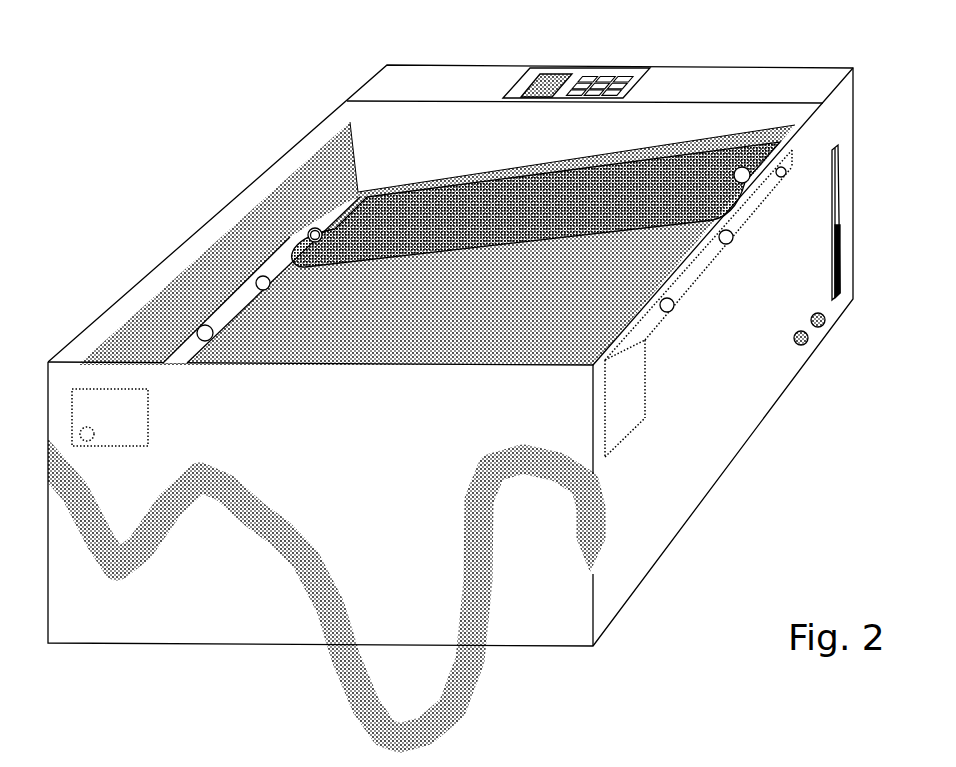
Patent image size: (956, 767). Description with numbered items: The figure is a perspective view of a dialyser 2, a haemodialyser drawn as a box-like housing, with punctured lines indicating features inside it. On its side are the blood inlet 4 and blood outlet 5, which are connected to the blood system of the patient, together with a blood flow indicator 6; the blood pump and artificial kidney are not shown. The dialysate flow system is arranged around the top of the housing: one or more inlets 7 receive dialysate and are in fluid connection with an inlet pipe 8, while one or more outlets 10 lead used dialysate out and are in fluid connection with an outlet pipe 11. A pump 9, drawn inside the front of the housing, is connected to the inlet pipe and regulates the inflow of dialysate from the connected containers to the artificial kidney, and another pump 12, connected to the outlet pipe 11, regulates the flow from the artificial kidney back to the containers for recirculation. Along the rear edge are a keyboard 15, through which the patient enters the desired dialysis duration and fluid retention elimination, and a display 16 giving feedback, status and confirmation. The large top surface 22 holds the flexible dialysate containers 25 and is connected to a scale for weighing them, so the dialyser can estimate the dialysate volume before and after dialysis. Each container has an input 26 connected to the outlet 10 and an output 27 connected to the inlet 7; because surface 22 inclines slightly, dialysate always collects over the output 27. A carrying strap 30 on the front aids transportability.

The dialyser 2 is at (235, 102).
The blood inlet 4 is at (808, 347).
The blood outlet 5 is at (826, 323).
The blood flow indicator 6 is at (845, 212).
The inlets 7 is at (255, 280).
The inlet pipe 8 is at (285, 265).
The pump 9 is at (110, 417).
The outlets 10 is at (727, 245).
The outlet pipe 11 is at (757, 208).
The pump 12 is at (625, 398).
The keyboard 15 is at (627, 67).
The display 16 is at (547, 80).
The surface 22 is at (437, 243).
The dialysate containers 25 is at (536, 204).
The input 26 is at (747, 167).
The output 27 is at (313, 228).
The carrying strap 30 is at (483, 664).